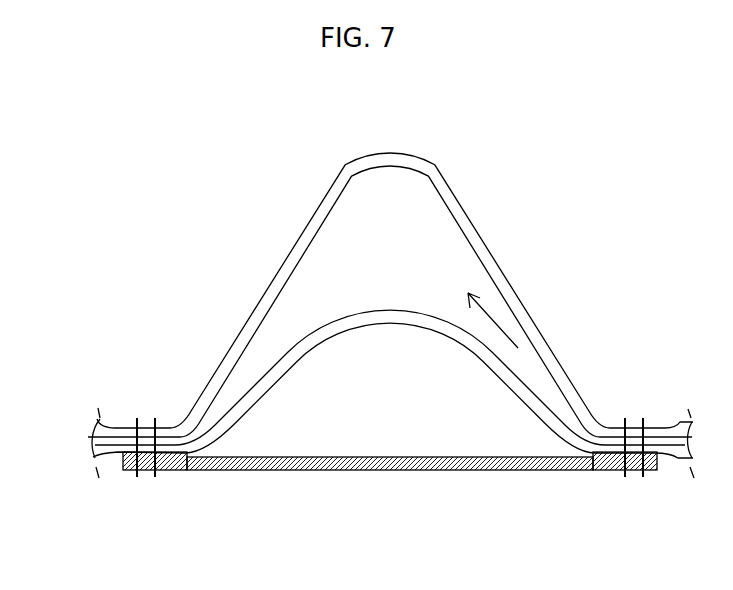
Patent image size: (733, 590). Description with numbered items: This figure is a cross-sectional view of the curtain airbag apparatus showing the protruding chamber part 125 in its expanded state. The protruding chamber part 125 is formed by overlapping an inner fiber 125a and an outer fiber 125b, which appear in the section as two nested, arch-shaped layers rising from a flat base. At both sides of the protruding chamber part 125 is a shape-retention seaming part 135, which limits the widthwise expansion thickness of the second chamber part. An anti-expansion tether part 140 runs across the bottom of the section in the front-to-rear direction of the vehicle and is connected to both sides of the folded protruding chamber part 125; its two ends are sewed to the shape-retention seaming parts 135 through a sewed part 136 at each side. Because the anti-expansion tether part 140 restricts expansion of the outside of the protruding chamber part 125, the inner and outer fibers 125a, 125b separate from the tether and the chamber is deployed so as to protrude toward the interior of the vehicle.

The protruding chamber part 125 is at (390, 305).
The inner fiber 125a is at (475, 345).
The outer fiber 125b is at (502, 270).
The shape-retention seaming part 135 is at (115, 421).
The sewed part 136 is at (185, 470).
The anti-expansion tether part 140 is at (458, 470).